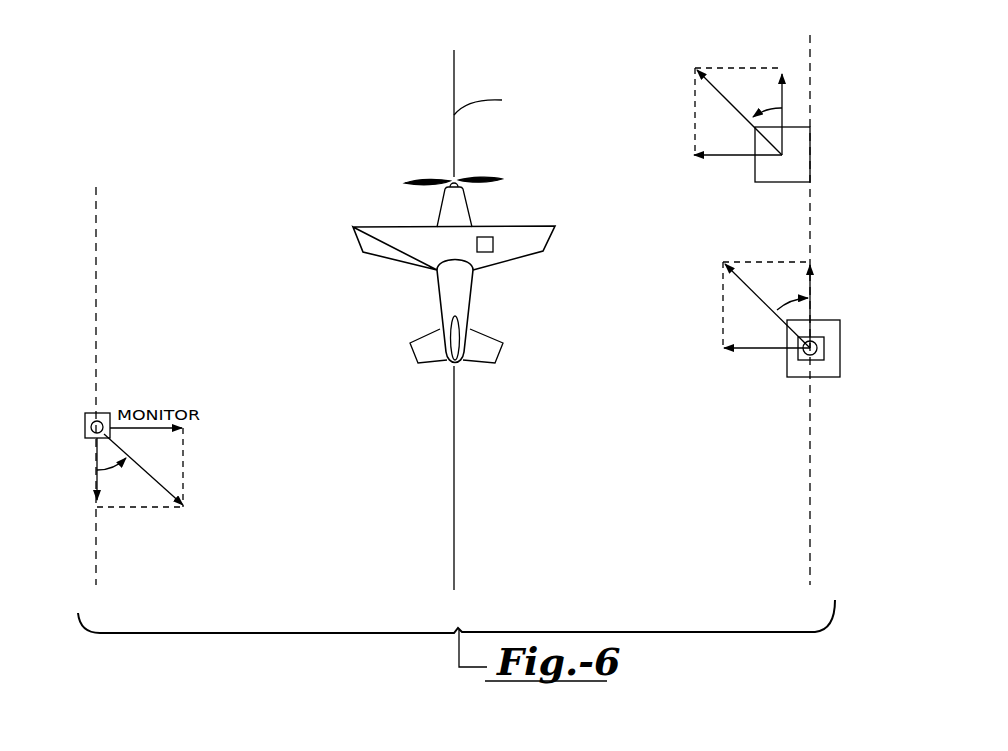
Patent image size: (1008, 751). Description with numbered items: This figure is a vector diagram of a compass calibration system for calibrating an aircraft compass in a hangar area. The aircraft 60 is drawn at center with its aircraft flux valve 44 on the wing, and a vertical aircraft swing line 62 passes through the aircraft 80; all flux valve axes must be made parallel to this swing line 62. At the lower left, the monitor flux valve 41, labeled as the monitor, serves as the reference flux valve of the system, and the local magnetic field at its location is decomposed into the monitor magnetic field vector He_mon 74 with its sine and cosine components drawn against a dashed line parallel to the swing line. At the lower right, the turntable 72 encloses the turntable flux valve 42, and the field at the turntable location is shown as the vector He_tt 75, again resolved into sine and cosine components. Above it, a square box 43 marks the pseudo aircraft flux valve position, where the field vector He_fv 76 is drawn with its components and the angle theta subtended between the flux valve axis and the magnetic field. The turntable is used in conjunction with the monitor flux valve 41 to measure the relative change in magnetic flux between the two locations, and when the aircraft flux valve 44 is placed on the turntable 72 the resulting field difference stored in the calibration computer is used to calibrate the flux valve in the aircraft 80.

The monitor flux valve 41 is at (85, 425).
The turntable flux valve 42 is at (798, 355).
The sensor box 43 is at (810, 153).
The aircraft flux valve 44 is at (489, 237).
The aircraft 60 is at (438, 270).
The swing line 62 is at (454, 75).
The turntable 72 is at (802, 378).
The monitor magnetic field vector He_mon 74 is at (183, 508).
The turntable magnetic field vector He_tt 75 is at (723, 262).
The aircraft flux valve magnetic field vector He_fv 76 is at (695, 68).
The aircraft 80 is at (479, 304).